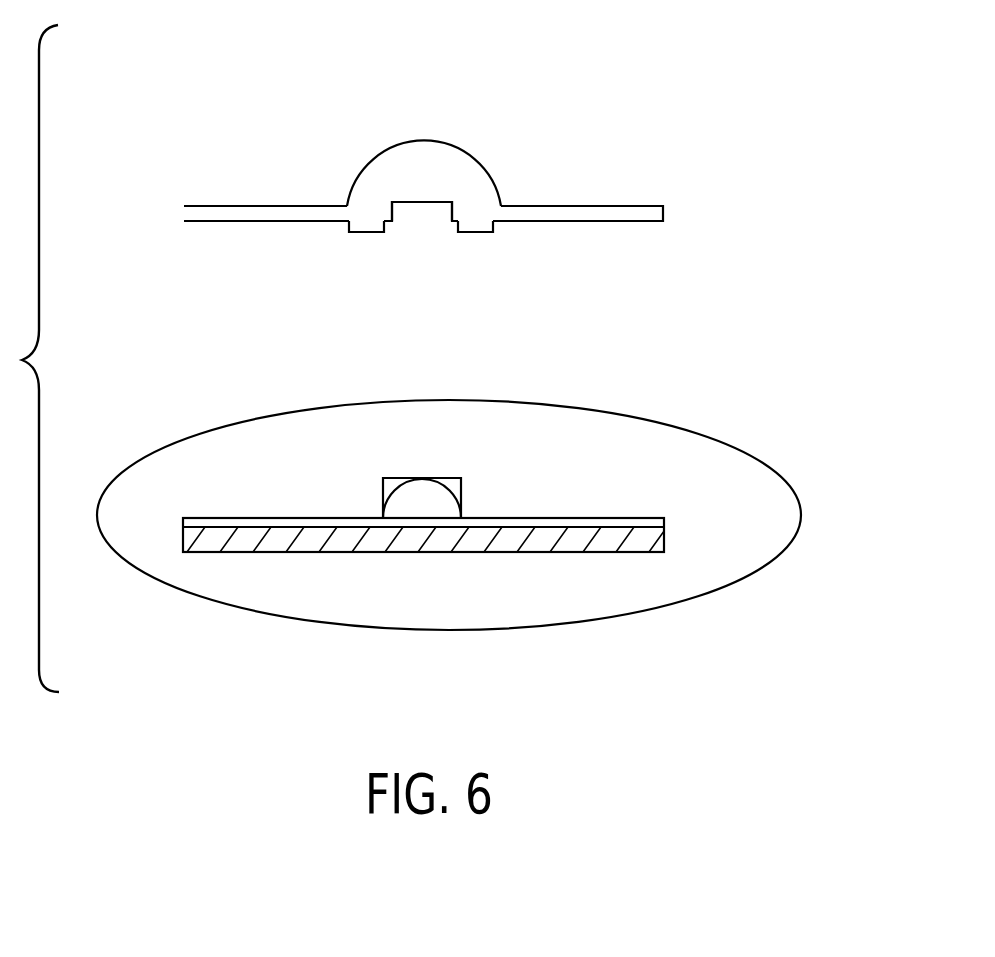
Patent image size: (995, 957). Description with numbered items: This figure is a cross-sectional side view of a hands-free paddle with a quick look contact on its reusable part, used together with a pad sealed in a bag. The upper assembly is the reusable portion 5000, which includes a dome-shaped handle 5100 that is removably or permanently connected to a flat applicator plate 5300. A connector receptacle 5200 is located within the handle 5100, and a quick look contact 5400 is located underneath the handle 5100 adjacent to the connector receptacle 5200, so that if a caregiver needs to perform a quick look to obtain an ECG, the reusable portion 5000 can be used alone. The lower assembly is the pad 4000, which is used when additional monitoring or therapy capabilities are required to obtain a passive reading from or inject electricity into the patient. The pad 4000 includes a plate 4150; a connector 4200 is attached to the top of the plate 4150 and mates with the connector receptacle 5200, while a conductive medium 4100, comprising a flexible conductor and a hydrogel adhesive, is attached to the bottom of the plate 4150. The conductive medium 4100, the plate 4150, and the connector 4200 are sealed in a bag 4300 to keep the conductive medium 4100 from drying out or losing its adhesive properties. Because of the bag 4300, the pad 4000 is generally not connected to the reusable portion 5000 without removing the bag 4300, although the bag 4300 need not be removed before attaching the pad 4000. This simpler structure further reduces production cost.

The reusable portion 5000 is at (444, 155).
The handle 5100 is at (423, 141).
The connector receptacle 5200 is at (400, 222).
The applicator plate 5300 is at (603, 205).
The quick look contact 5400 is at (365, 233).
The pad 4000 is at (486, 530).
The conductive medium 4100 is at (665, 537).
The plate 4150 is at (540, 517).
The connector 4200 is at (444, 478).
The bag 4300 is at (426, 629).